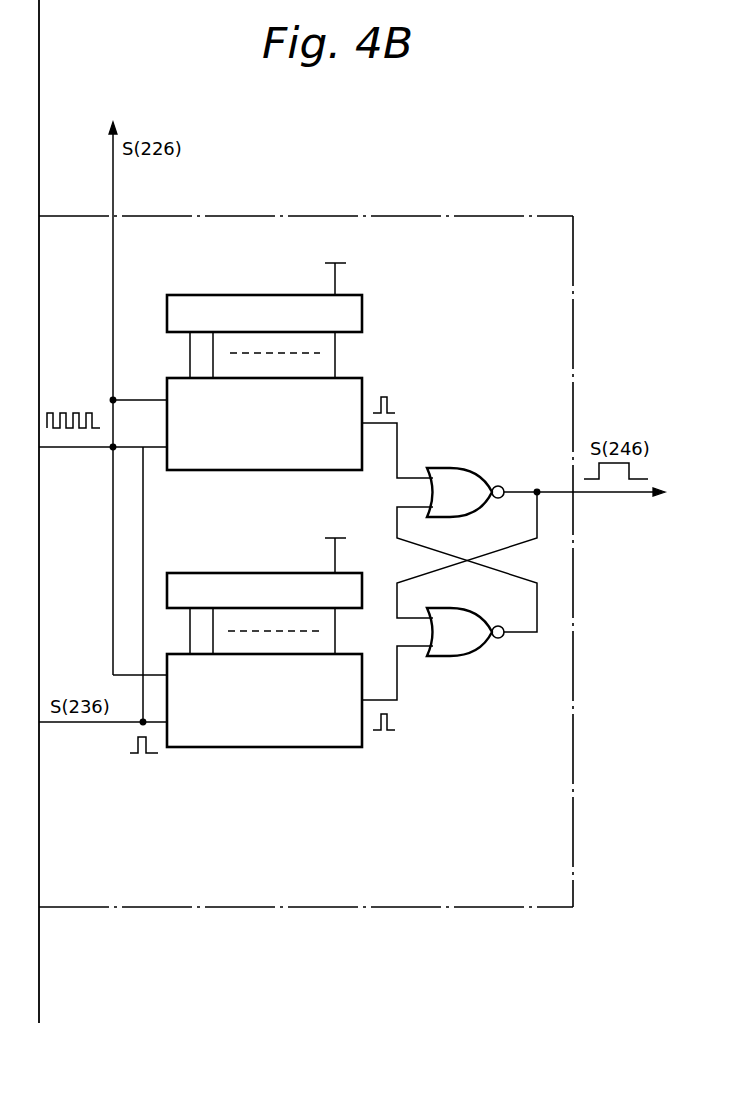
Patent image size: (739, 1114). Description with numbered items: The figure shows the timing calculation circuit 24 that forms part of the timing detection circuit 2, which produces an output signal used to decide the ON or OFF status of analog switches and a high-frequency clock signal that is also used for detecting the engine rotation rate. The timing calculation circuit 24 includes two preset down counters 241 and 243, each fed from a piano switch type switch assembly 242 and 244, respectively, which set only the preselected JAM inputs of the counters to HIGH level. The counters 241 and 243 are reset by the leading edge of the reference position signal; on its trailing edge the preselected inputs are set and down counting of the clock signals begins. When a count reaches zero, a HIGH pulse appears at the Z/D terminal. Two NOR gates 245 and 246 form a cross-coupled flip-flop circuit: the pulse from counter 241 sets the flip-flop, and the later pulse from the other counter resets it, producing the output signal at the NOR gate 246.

The timing detection circuit 2 is at (437, 215).
The timing calculation circuit 24 is at (500, 905).
The down counter 241 is at (313, 748).
The switch assembly 242 is at (198, 572).
The down counter 243 is at (364, 381).
The switch assembly 244 is at (364, 312).
The NOR gate 245 is at (461, 657).
The NOR gate 246 is at (461, 469).